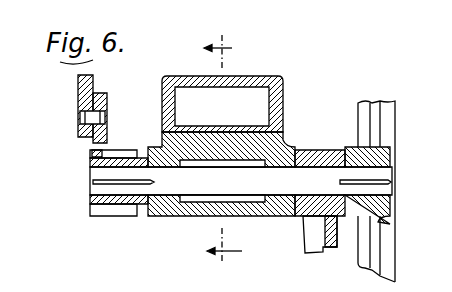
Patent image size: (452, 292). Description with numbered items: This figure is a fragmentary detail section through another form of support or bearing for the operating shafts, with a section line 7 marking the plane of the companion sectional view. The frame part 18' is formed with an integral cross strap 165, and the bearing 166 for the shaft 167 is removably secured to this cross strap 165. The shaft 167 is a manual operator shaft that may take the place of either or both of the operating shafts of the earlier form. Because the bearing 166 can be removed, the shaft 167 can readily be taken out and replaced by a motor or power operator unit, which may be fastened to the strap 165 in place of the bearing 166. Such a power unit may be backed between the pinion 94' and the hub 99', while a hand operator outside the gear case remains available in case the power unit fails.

The section line 7- 7 is at (223, 151).
The frame part 18' is at (245, 100).
The cross strap 165 is at (248, 128).
The bearing 166 is at (195, 217).
The shaft 167 is at (100, 179).
The pinion 94' is at (90, 181).
The hub 99' is at (324, 206).